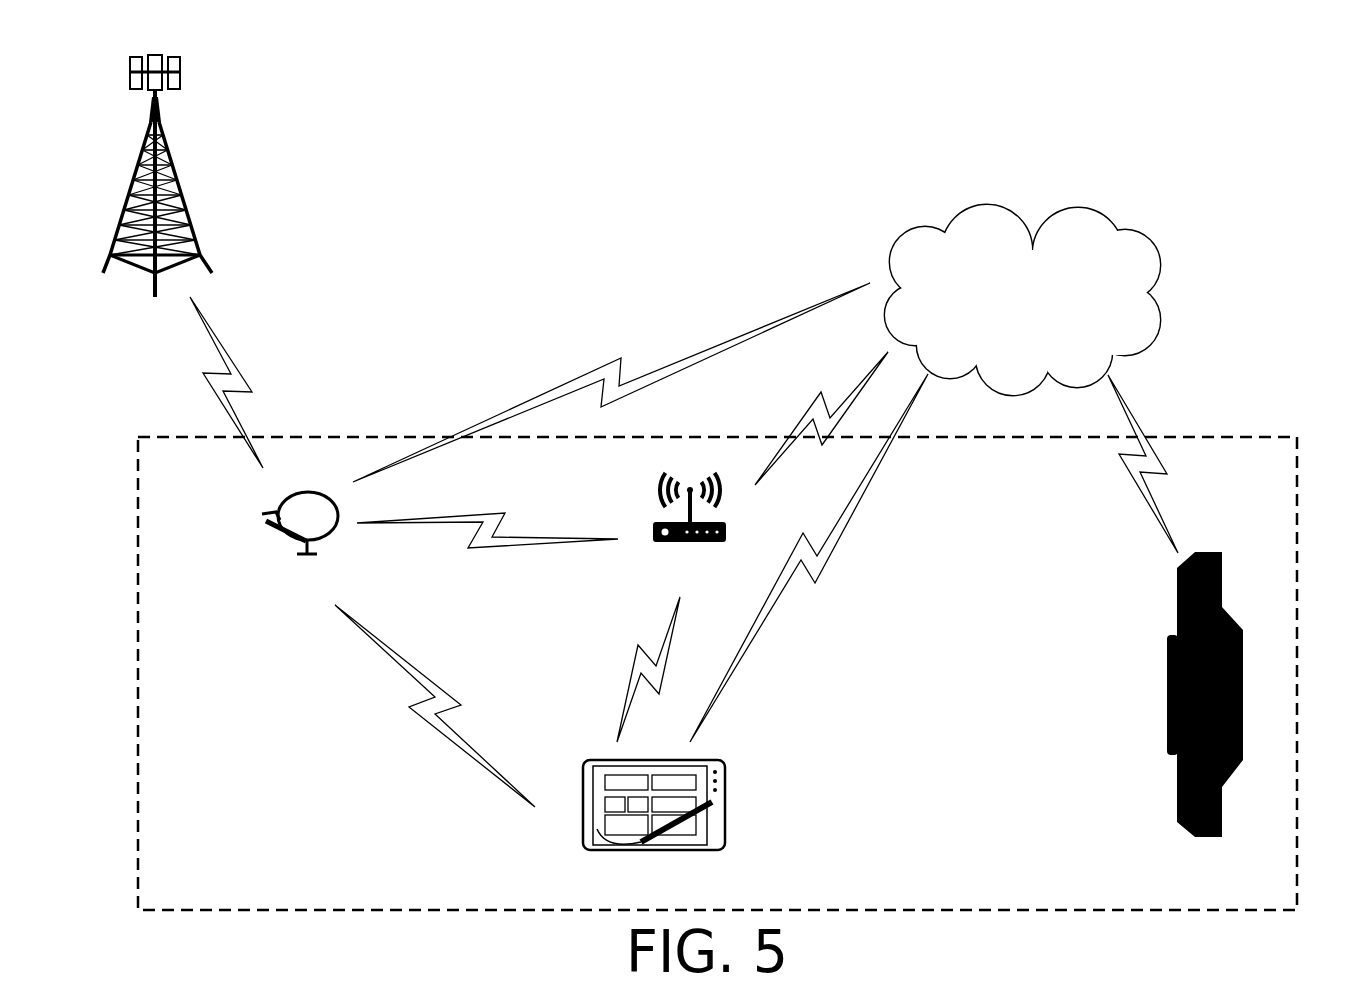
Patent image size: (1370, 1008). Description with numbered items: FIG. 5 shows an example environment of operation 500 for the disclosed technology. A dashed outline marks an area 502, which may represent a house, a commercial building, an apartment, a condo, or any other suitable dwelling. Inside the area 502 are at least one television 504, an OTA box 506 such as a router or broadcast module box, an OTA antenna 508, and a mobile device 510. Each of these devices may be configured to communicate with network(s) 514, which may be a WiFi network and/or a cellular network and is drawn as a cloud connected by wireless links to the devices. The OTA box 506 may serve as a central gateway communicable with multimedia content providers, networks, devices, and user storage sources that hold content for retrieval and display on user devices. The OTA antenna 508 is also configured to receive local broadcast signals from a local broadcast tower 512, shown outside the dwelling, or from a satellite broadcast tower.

The system 500 is at (1218, 172).
The area 502 is at (1243, 472).
The television 504 is at (1195, 884).
The OTA box 506 is at (672, 579).
The OTA antenna 508 is at (357, 576).
The mobile device 510 is at (634, 894).
The local broadcast tower 512 is at (175, 366).
The network(s) 514 is at (1022, 300).